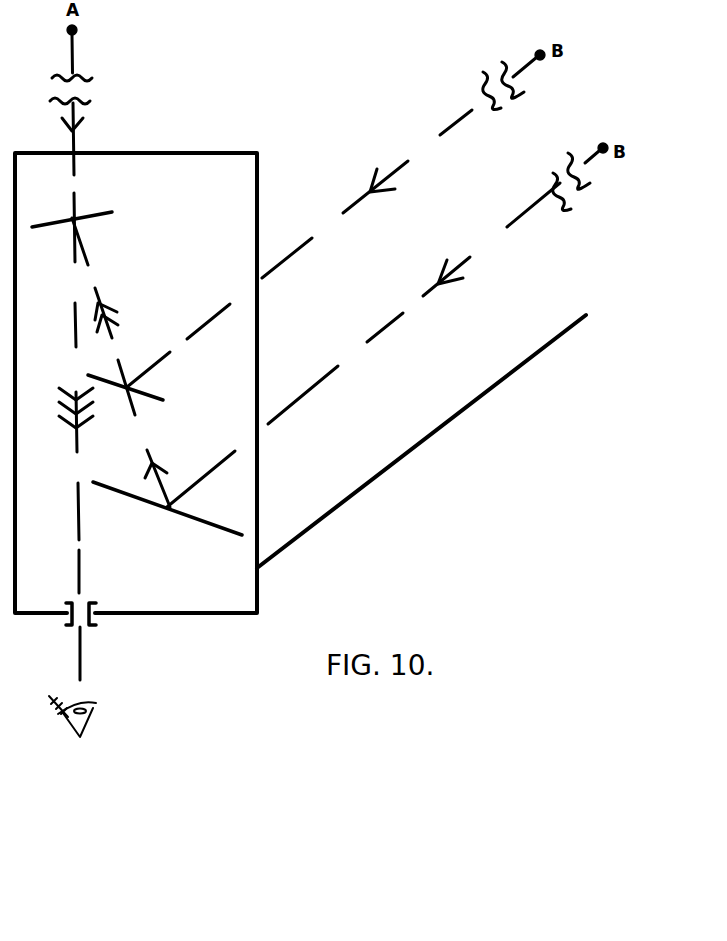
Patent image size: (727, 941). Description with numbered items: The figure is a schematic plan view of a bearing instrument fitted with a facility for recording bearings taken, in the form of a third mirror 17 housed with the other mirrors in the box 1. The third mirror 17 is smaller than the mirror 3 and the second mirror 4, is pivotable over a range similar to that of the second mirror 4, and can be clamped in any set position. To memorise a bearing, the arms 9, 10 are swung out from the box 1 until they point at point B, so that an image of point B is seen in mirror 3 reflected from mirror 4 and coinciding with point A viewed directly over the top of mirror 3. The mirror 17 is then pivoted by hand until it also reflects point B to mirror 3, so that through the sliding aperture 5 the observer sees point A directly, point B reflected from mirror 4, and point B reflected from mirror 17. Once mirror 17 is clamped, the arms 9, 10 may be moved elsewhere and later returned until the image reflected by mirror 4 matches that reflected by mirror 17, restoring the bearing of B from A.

The box 1 is at (216, 160).
The mirror 3 is at (112, 212).
The third mirror 17 is at (163, 400).
The second mirror 4 is at (212, 527).
The sliding aperture 5 is at (83, 627).
The arm 9 is at (421, 441).
The arm 10 is at (412, 452).